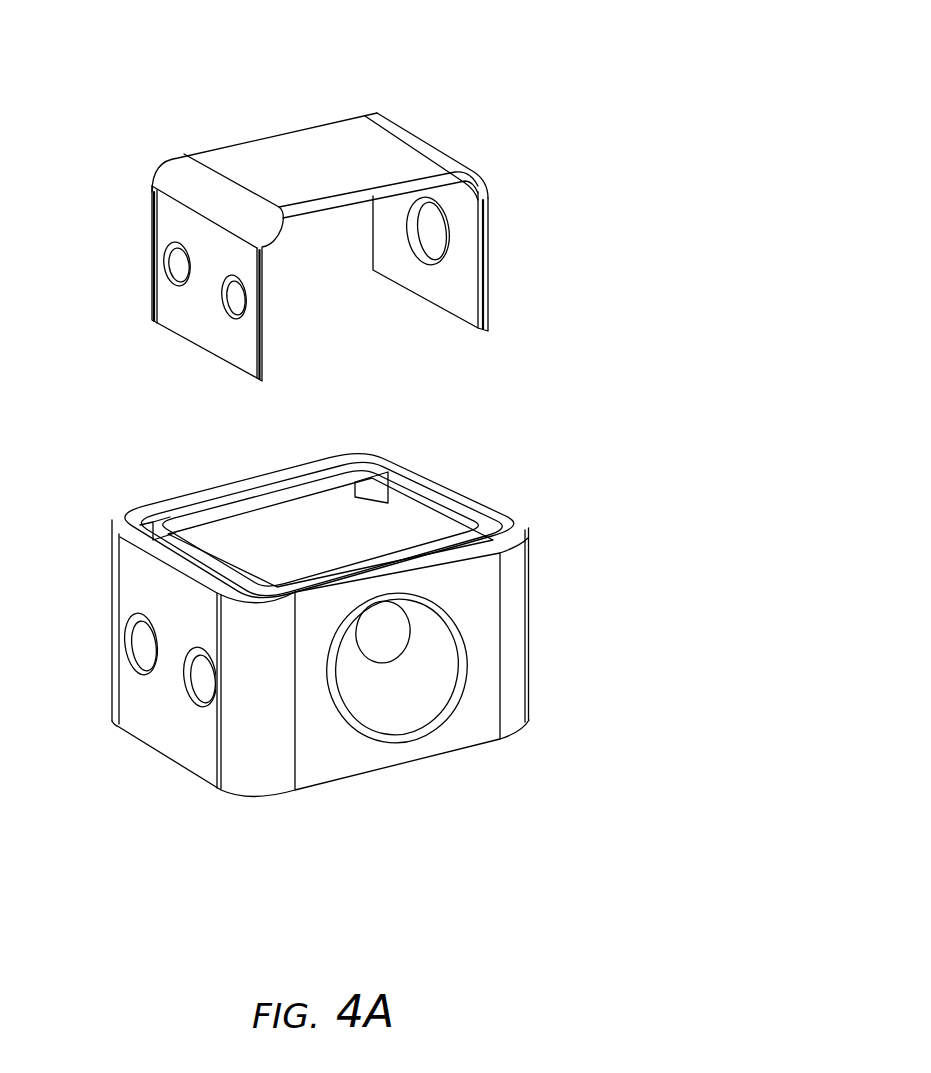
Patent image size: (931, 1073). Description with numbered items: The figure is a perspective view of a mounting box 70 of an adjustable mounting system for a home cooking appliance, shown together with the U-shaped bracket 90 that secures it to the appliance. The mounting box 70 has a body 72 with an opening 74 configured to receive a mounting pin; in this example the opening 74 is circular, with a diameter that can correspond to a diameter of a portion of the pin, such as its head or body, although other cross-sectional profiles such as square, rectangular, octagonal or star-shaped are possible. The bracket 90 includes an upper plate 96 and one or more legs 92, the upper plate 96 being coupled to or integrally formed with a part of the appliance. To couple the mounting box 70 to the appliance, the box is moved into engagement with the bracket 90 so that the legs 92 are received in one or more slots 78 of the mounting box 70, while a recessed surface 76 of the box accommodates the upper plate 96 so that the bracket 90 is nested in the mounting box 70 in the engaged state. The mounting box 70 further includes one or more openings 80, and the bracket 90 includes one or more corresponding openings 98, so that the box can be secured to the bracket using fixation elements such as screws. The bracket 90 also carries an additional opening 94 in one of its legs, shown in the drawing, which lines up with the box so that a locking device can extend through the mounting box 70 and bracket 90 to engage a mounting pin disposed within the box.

The mounting box 70 is at (229, 865).
The body 72 is at (528, 655).
The opening 74 is at (407, 733).
The recessed surface 76 is at (276, 520).
The slots 78 is at (152, 515).
The openings 80 is at (130, 667).
The U-shaped bracket 90 is at (425, 96).
The legs 92 is at (152, 222).
The flange hole 94 is at (405, 235).
The upper plate 96 is at (287, 150).
The openings 98 is at (163, 263).